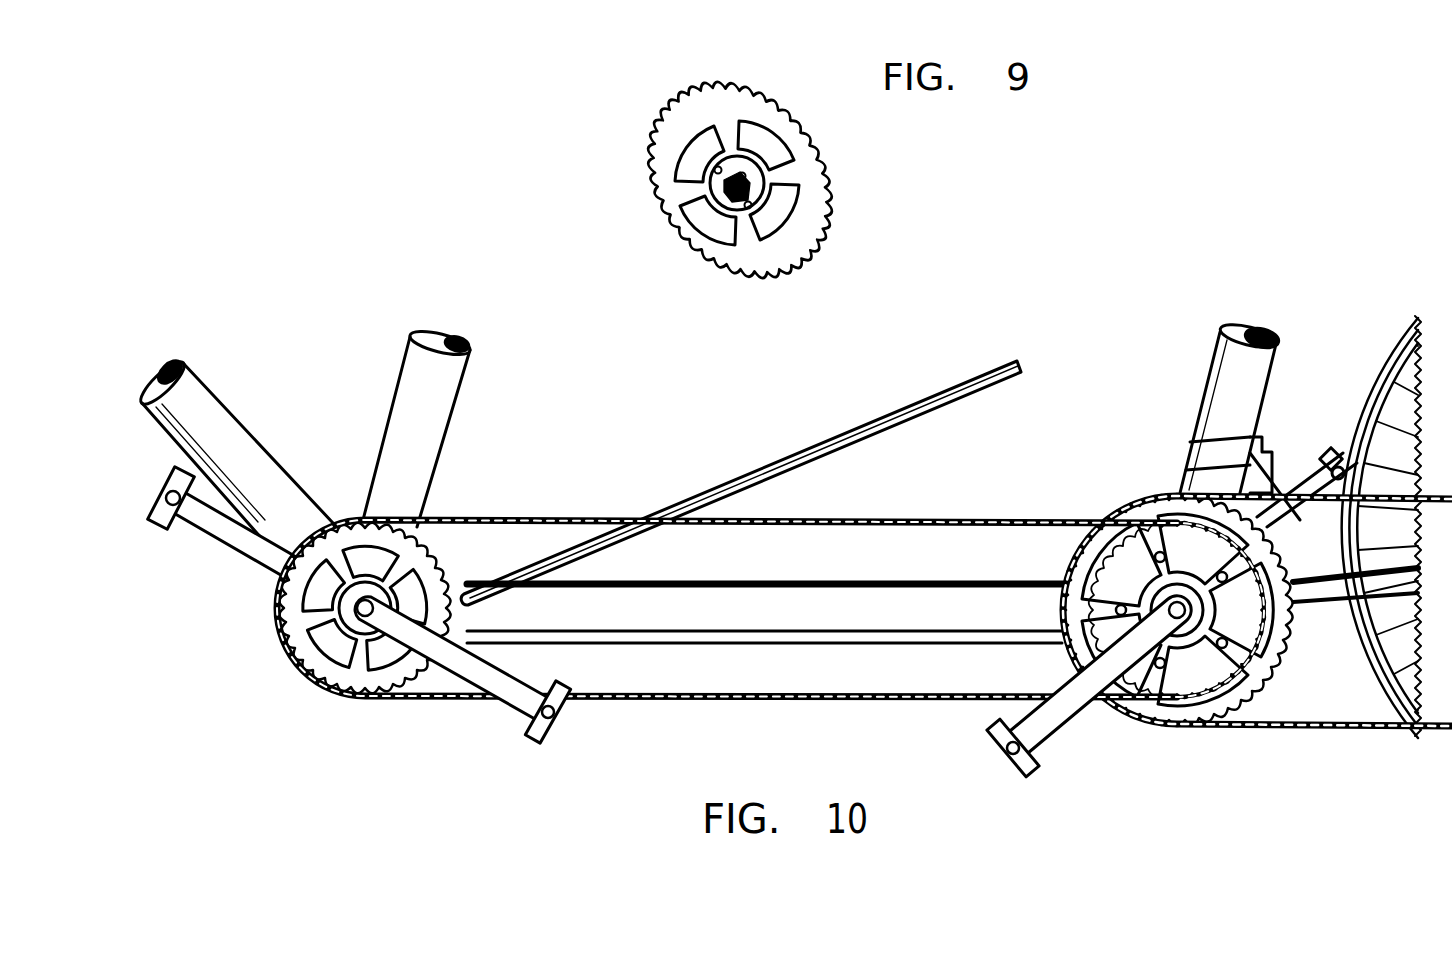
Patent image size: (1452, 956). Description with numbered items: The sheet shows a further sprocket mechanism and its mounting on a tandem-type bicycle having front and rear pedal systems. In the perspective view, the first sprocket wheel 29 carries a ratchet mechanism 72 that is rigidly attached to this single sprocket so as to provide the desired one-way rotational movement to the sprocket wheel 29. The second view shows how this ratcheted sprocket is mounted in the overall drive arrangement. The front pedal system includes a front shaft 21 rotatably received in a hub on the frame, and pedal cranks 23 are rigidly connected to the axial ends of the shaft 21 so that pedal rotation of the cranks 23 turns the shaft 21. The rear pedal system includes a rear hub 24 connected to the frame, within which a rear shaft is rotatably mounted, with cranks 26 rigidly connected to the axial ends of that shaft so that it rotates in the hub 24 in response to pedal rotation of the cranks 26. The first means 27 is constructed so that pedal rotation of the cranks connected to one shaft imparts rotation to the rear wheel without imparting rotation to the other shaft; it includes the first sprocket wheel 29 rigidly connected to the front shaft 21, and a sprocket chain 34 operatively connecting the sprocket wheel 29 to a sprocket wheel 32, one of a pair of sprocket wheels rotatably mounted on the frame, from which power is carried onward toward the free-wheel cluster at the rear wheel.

In FIG. 10, the front shaft 21 is at (350, 621).
In FIG. 10, the pedal cranks 23 is at (520, 697).
In FIG. 10, the rear hub 24 is at (1120, 580).
In FIG. 10, the cranks 26 is at (1045, 718).
In FIG. 10, the first means 27 is at (518, 520).
In FIG. 9, the first sprocket wheel 29 is at (808, 212).
In FIG. 10, the first sprocket wheel 29 is at (326, 640).
In FIG. 10, the sprocket wheel 32 is at (1200, 677).
In FIG. 10, the sprocket chain 34 is at (770, 700).
In FIG. 9, the ratchet mechanism 72 is at (733, 215).
In FIG. 10, the ratchet mechanism 72 is at (357, 627).